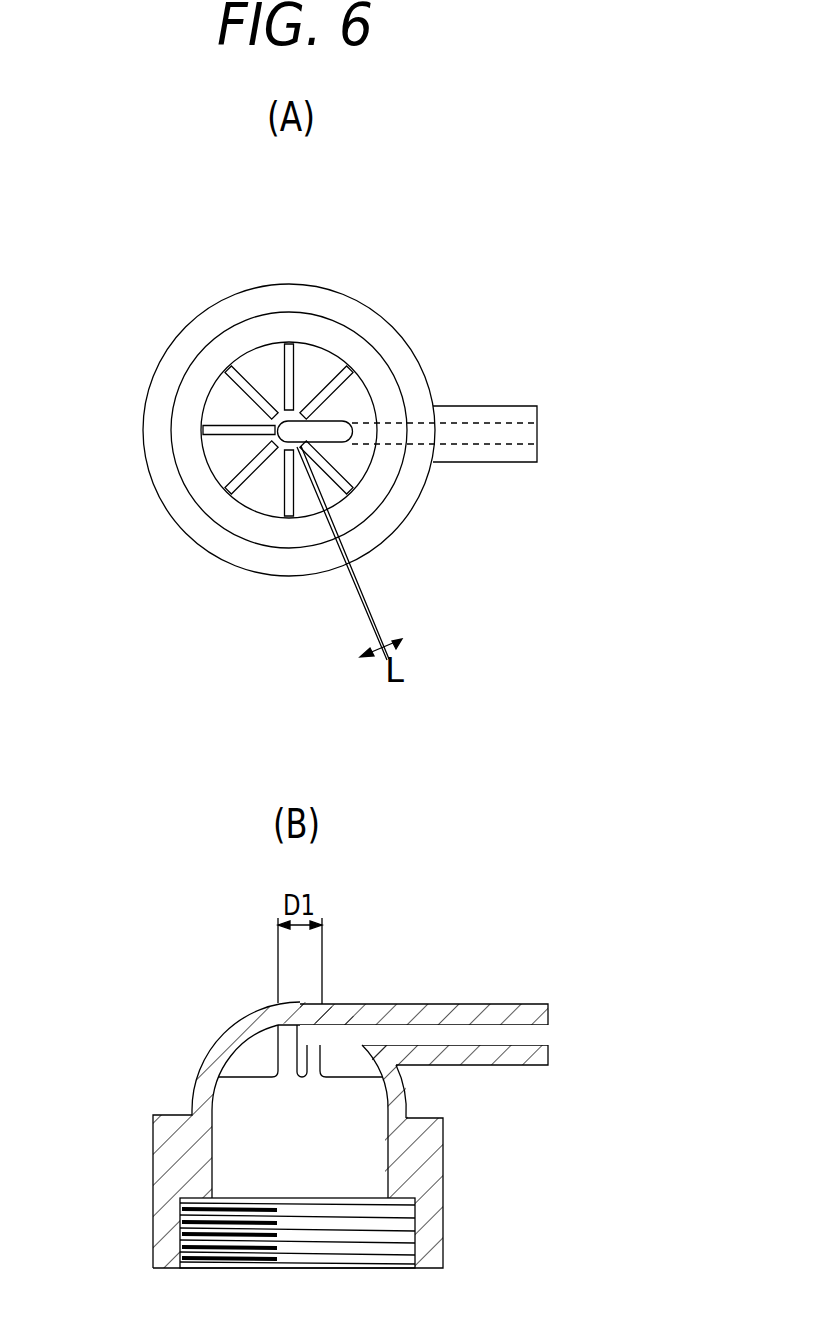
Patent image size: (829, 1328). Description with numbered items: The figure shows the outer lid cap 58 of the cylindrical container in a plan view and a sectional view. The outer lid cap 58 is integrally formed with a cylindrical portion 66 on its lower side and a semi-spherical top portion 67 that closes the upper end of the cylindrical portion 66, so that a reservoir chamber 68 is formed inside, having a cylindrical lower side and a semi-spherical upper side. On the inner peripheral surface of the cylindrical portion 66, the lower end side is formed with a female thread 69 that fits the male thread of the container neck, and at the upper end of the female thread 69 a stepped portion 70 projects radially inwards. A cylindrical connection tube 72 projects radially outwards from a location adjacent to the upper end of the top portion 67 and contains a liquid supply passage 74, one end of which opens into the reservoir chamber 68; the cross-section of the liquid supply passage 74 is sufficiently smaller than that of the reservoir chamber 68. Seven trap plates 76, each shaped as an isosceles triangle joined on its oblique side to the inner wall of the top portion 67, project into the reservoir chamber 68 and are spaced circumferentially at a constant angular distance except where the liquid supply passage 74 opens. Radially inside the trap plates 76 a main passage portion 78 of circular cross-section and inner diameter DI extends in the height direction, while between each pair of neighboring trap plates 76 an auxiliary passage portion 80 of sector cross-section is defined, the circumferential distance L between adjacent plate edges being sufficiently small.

The outer lid cap 58 is at (317, 258).
The cylindrical portion 66 is at (417, 507).
The top portion 67 is at (238, 1012).
The reservoir chamber 68 is at (274, 1195).
The female thread 69 is at (195, 1255).
The stepped portion 70 is at (287, 533).
The connection tube 72 is at (505, 406).
The liquid supply passage 74 is at (505, 446).
The trap plates 76 is at (280, 362).
The main passage portion 78 is at (262, 410).
The auxiliary passage portion 80 is at (320, 368).